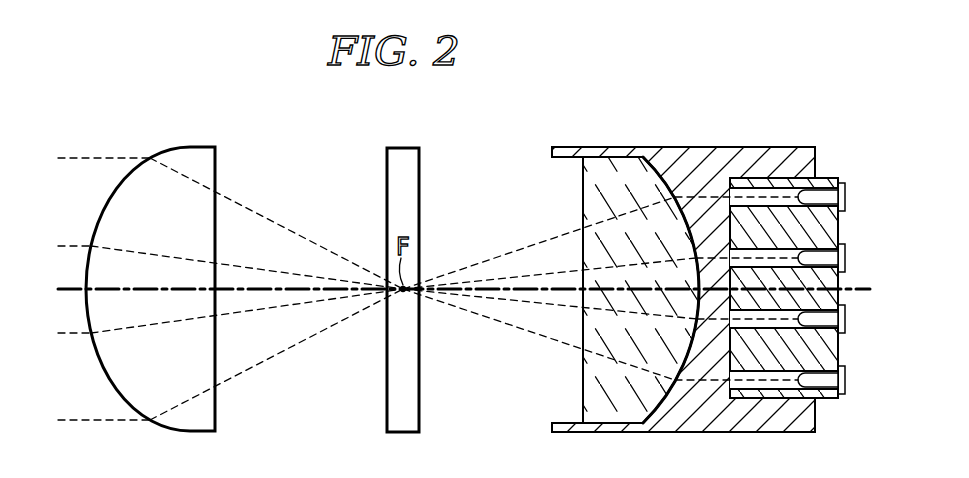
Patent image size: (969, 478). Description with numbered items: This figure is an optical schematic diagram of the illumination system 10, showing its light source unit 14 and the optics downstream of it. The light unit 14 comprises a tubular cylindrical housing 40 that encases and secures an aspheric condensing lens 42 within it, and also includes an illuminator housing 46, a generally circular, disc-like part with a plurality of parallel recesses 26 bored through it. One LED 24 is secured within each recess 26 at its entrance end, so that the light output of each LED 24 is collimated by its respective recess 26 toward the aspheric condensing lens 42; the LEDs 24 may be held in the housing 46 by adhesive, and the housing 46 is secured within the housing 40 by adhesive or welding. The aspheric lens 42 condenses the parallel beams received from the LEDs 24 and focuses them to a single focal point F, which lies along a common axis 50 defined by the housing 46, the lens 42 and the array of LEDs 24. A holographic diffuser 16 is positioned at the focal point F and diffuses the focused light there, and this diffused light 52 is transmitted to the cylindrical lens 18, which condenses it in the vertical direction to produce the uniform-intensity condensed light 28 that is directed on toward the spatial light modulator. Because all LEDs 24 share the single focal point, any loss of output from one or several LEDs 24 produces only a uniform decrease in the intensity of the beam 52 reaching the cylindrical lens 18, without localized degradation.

The optical illumination system 10 is at (563, 71).
The light source unit 14 is at (752, 126).
The holographic diffuser 16 is at (398, 146).
The cylindrical lens 18 is at (197, 146).
The light emitting elements 24 is at (848, 192).
The recesses 26 is at (730, 203).
The condensed light 28 is at (100, 157).
The tubular cylindrical housing 40 is at (692, 146).
The aspheric condensing lens 42 is at (583, 367).
The illuminator housing 46 is at (830, 177).
The common axis 50 is at (475, 285).
The diffused light 52 is at (257, 212).